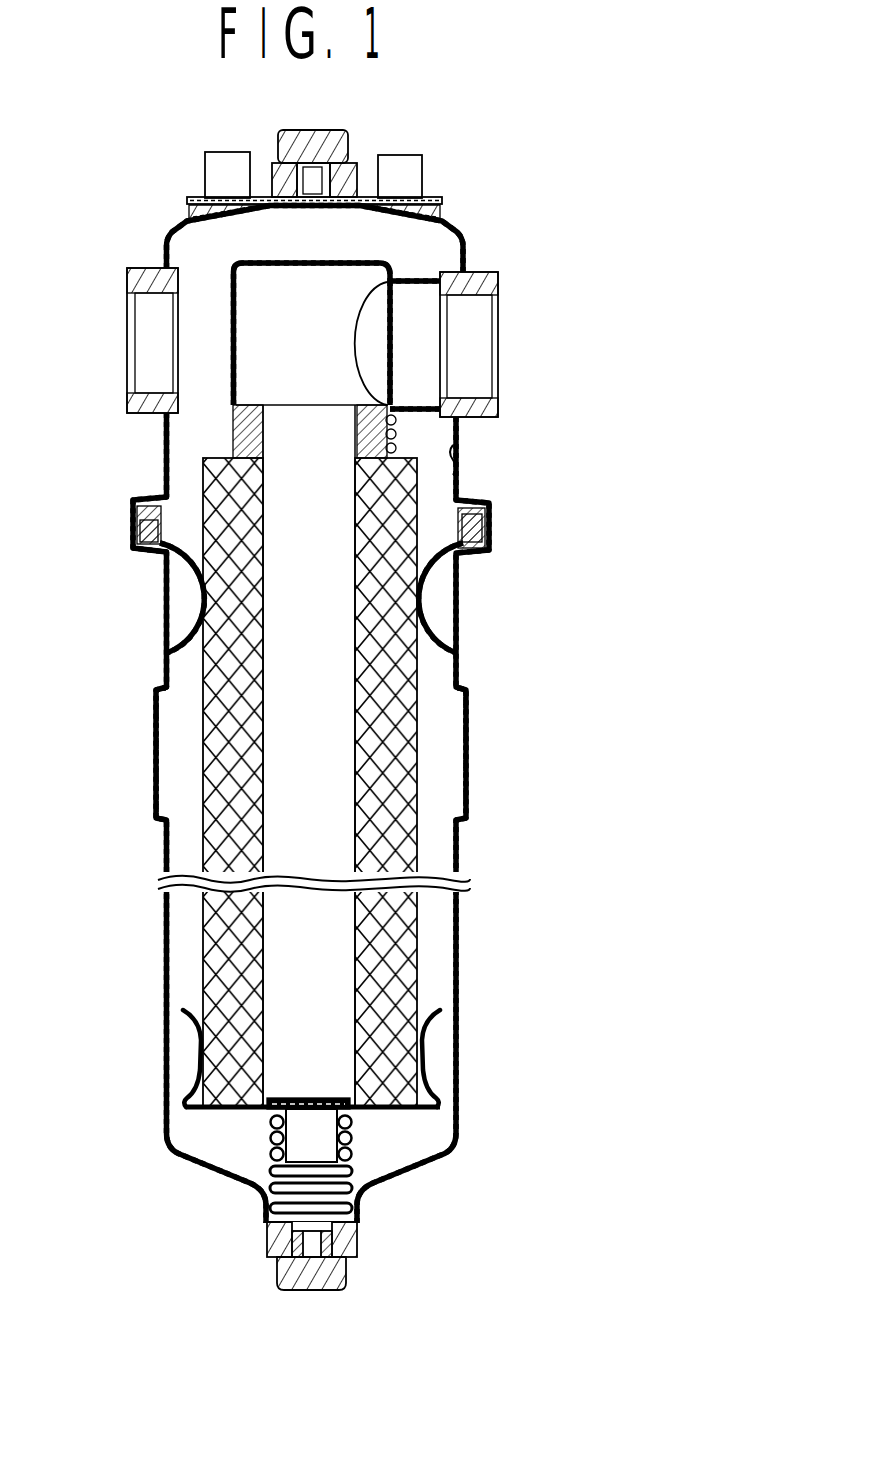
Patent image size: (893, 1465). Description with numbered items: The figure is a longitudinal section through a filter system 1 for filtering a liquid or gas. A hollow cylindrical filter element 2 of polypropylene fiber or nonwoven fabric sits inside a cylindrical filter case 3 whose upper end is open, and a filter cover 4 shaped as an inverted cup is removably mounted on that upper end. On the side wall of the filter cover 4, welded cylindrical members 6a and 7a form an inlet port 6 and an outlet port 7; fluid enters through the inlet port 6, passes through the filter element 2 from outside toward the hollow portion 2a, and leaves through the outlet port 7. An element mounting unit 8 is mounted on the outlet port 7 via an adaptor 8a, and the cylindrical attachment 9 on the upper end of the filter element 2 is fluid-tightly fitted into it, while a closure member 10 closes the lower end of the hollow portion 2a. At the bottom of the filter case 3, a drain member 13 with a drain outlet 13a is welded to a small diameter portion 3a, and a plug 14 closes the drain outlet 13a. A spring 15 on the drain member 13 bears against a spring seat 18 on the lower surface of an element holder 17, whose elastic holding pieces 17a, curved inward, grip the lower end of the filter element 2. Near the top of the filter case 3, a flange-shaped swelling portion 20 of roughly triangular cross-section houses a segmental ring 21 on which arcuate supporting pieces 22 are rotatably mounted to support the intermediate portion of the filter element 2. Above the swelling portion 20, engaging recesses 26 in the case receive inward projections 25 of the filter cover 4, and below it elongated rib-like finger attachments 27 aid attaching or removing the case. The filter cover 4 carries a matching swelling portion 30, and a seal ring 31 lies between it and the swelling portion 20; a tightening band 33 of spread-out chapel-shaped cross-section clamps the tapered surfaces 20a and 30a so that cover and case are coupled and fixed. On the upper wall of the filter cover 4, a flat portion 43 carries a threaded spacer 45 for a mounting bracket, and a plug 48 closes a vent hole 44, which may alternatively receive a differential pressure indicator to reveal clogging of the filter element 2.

The filter system 1 is at (548, 166).
The filter element 2 is at (370, 756).
The hollow portion 2a is at (320, 768).
The filter case 3 is at (484, 612).
The small diameter portion 3a is at (266, 1208).
The filter cover 4 is at (494, 225).
The inlet port 6 is at (115, 310).
The cylindrical member 6a is at (130, 273).
The outlet port 7 is at (503, 325).
The cylindrical member 7a is at (490, 282).
The element mounting unit 8 is at (232, 325).
The adaptor 8a is at (427, 396).
The attachment 9 is at (235, 433).
The closure member 10 is at (335, 1095).
The drain member 13 is at (372, 1271).
The drain outlet 13a is at (347, 1268).
The plug 14 is at (278, 1270).
The spring 15 is at (370, 1182).
The element holder 17 is at (310, 1067).
The elastic holding pieces 17a is at (199, 1032).
The spring seat 18 is at (280, 1140).
The swelling portion 20 is at (488, 552).
The tapered surface 20a is at (150, 553).
The segmental ring 21 is at (153, 550).
The supporting pieces 22 is at (187, 630).
The projections 25 is at (460, 465).
The engaging recesses 26 is at (460, 453).
The finger attachments 27 is at (153, 743).
The swelling portion 30 is at (137, 512).
The tapered surface 30a is at (147, 503).
The seal ring 31 is at (140, 523).
The tightening band 33 is at (504, 533).
The flat portion 43 is at (187, 214).
The vent hole 44 is at (333, 137).
The spacer 45 is at (222, 152).
The plug 48 is at (312, 130).